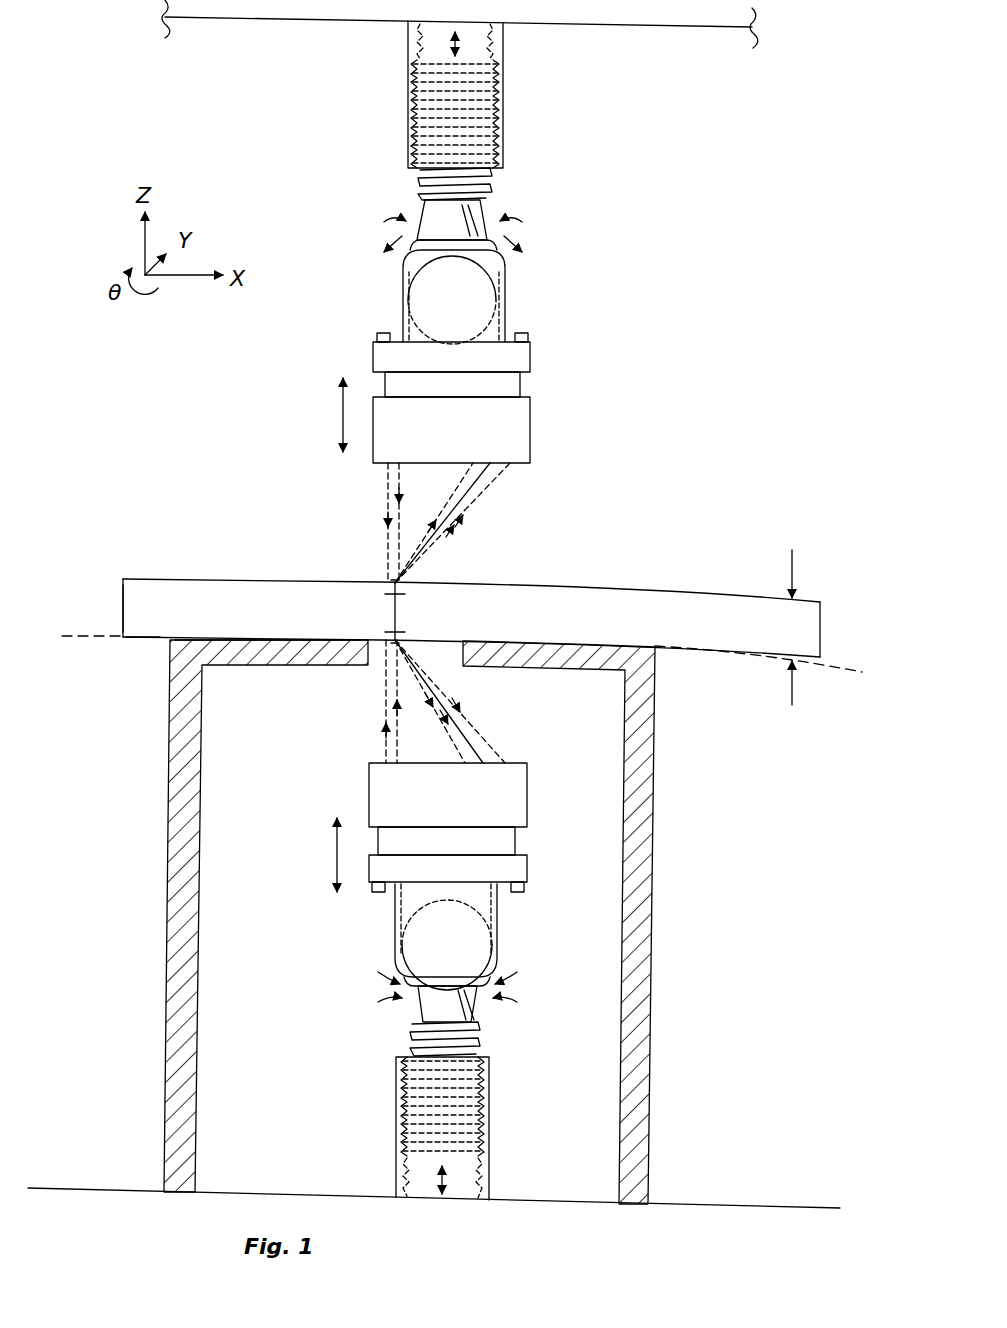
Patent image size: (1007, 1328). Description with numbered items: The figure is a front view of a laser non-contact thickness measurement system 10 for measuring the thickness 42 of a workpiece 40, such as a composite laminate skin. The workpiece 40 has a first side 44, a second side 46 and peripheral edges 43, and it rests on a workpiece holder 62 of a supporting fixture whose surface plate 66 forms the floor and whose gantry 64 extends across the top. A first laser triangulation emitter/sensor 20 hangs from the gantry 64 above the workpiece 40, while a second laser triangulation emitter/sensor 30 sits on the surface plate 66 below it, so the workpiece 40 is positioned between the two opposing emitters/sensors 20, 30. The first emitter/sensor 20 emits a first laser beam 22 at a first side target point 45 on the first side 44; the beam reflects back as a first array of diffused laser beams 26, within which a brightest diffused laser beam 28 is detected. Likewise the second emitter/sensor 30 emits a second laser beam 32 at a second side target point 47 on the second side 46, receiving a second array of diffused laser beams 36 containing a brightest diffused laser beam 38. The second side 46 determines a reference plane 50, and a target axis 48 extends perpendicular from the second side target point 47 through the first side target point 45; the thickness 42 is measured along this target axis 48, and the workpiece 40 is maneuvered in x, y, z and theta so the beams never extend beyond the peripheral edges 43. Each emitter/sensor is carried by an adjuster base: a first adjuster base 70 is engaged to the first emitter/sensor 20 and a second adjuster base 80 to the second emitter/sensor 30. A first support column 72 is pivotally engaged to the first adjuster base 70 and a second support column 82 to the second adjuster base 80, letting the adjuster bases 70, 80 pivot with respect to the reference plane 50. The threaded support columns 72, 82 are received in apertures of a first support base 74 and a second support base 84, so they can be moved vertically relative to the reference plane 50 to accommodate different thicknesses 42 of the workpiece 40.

The laser non-contact thickness measurement system 10 is at (636, 128).
The first laser triangulation emitter/sensor 20 is at (530, 433).
The first laser beam 22 is at (388, 495).
The first array of diffused laser beams 26 is at (495, 485).
The brightest diffused laser beam 28 is at (440, 525).
The second laser triangulation emitter/sensor 30 is at (528, 800).
The second laser beam 32 is at (383, 712).
The second array of diffused laser beams 36 is at (460, 700).
The brightest diffused laser beam 38 is at (470, 735).
The workpiece 40 is at (122, 583).
The thickness 42 is at (822, 625).
The peripheral edges 43 is at (123, 612).
The first side 44 is at (172, 580).
The first side target point 45 is at (393, 581).
The second side 46 is at (137, 639).
The second side target point 47 is at (390, 650).
The target axis 48 is at (400, 612).
The reference plane 50 is at (95, 640).
The workpiece holder 62 is at (655, 783).
The gantry 64 is at (268, 19).
The surface plate 66 is at (250, 1193).
The first adjuster base 70 is at (530, 352).
The first support column 72 is at (484, 213).
The first support base 74 is at (503, 100).
The second adjuster base 80 is at (527, 875).
The second support column 82 is at (485, 1010).
The second support base 84 is at (489, 1103).